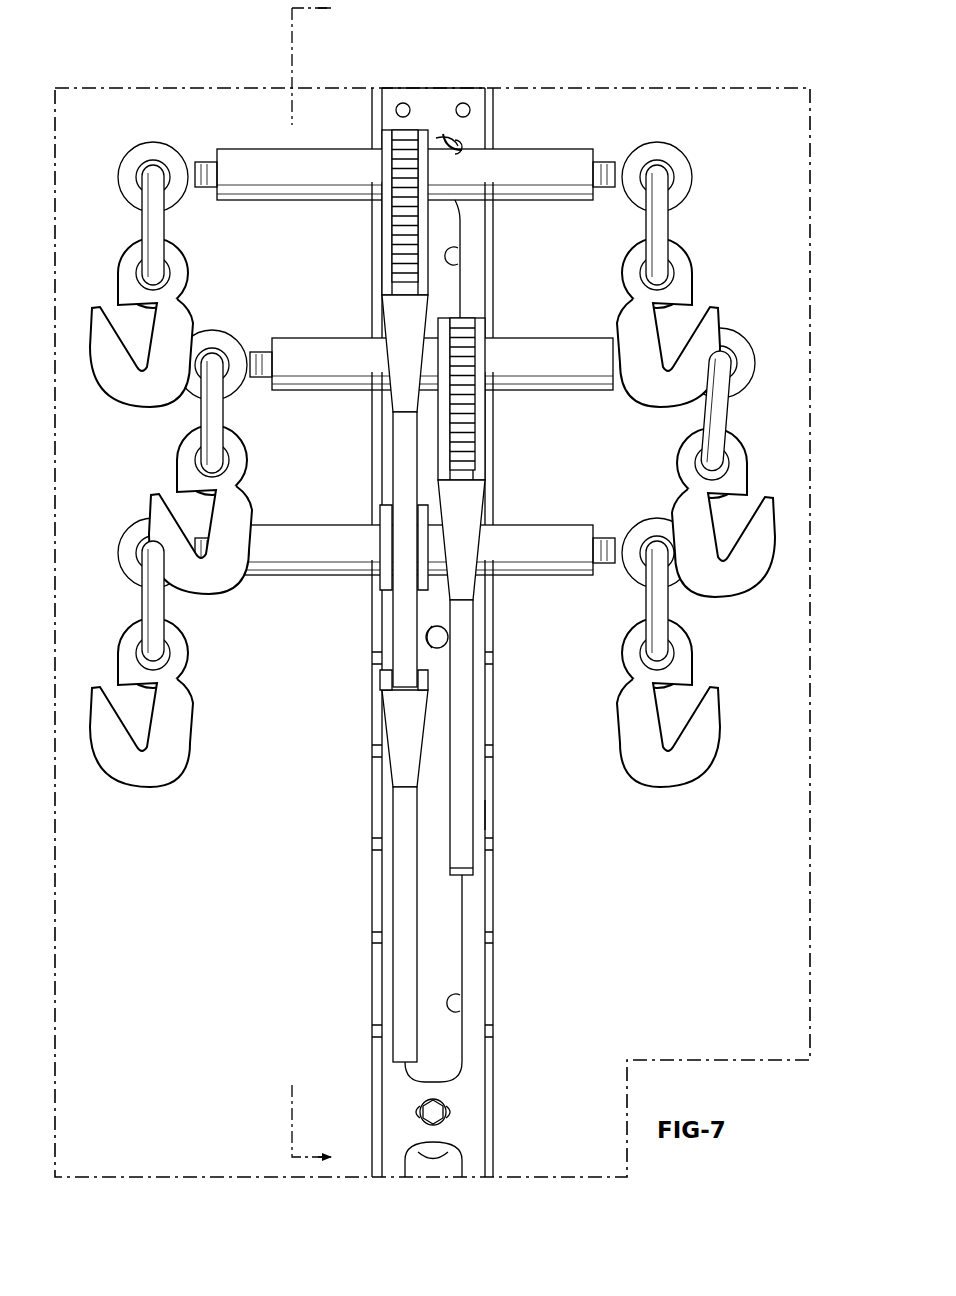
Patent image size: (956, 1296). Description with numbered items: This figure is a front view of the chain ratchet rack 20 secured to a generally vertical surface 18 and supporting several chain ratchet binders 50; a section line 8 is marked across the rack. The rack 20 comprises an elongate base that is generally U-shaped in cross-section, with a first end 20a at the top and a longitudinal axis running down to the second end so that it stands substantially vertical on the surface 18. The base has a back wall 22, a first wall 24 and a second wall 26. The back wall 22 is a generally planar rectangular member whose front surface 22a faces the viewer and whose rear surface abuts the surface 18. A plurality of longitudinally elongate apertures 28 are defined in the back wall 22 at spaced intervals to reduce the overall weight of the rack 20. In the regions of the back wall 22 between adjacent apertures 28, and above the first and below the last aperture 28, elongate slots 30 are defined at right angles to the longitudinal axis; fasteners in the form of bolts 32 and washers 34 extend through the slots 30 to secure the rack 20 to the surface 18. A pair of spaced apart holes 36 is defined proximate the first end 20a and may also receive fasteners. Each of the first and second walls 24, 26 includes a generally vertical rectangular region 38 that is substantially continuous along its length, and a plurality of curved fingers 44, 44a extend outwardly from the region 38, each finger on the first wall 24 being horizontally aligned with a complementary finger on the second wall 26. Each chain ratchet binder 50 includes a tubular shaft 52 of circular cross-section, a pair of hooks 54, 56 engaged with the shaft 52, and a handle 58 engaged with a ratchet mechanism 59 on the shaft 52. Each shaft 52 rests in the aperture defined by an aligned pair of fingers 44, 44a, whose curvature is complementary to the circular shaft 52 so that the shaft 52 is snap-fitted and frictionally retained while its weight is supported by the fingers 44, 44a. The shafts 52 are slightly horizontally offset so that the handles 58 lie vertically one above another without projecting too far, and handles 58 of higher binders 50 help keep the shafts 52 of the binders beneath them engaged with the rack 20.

The surface 18 is at (100, 95).
The section line 8 is at (323, 584).
The rack 20 is at (495, 816).
The first end 20a is at (480, 75).
The back wall 22 is at (415, 92).
The front surface 22a is at (475, 1056).
The first wall 24 is at (370, 712).
The second wall 26 is at (495, 1082).
The aperture 28 is at (458, 256).
The slot 30 is at (458, 152).
The bolt 32 is at (442, 136).
The washer 34 is at (448, 140).
The hole 36 is at (403, 103).
The rectangular region 38 is at (372, 115).
The finger 44 is at (370, 402).
The finger 44a is at (370, 212).
The chain ratchet binder 50 is at (585, 145).
The shaft 52 is at (562, 148).
The hook 54 is at (135, 408).
The hook 56 is at (650, 410).
The handle 58 is at (400, 636).
The ratchet mechanism 59 is at (400, 170).